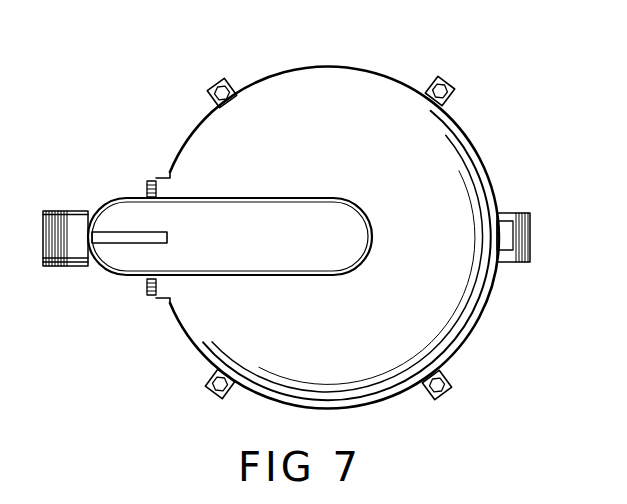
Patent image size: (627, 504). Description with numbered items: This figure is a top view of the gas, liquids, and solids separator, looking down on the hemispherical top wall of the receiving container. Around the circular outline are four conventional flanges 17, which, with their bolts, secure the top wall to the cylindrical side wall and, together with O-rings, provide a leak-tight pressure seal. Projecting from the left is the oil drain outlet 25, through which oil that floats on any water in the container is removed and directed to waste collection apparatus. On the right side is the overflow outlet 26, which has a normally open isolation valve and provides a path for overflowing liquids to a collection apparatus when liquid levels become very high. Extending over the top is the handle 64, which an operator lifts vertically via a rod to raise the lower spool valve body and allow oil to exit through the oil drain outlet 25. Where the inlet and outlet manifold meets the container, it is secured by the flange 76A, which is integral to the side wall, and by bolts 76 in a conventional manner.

The flanges 17 is at (225, 81).
The oil drain outlet 25 is at (42, 253).
The overflow outlet 26 is at (523, 264).
The handle 64 is at (165, 232).
The bolts 76 is at (147, 186).
The flange 76A is at (163, 177).